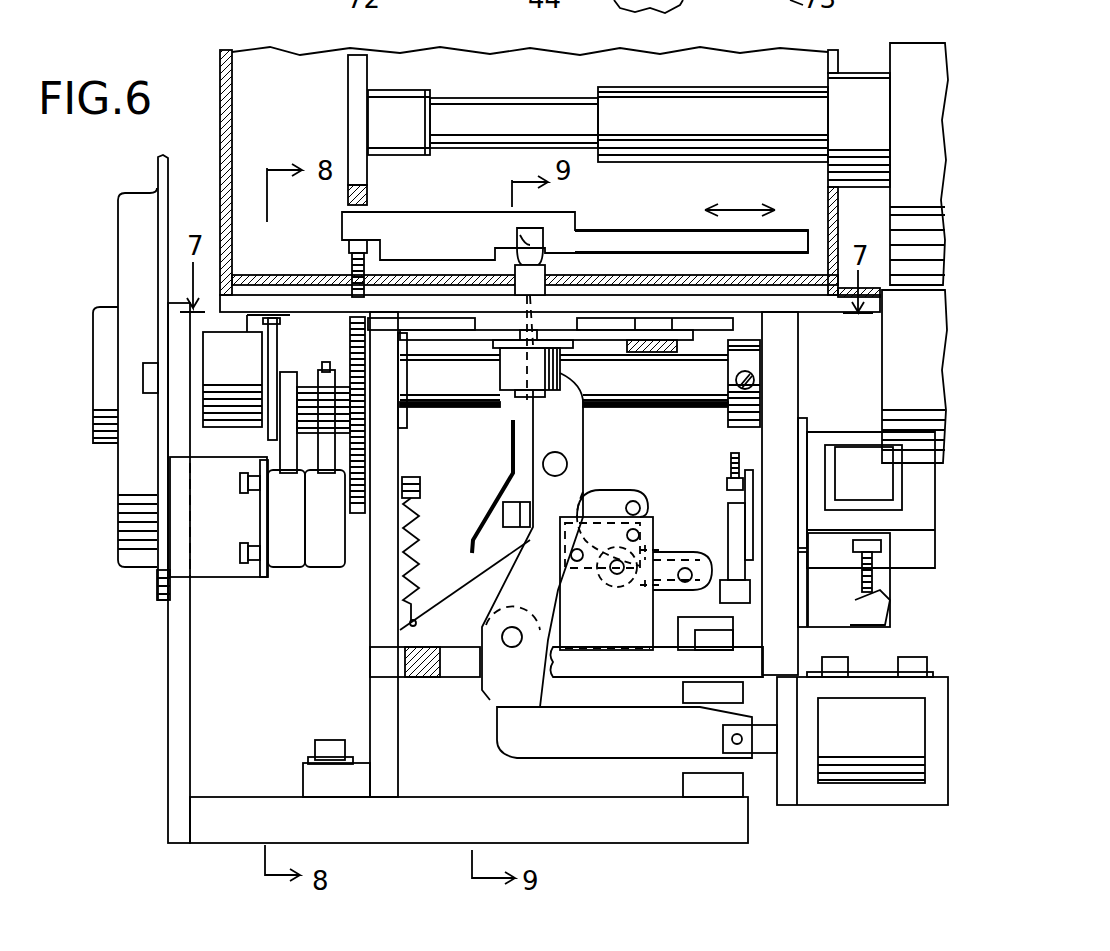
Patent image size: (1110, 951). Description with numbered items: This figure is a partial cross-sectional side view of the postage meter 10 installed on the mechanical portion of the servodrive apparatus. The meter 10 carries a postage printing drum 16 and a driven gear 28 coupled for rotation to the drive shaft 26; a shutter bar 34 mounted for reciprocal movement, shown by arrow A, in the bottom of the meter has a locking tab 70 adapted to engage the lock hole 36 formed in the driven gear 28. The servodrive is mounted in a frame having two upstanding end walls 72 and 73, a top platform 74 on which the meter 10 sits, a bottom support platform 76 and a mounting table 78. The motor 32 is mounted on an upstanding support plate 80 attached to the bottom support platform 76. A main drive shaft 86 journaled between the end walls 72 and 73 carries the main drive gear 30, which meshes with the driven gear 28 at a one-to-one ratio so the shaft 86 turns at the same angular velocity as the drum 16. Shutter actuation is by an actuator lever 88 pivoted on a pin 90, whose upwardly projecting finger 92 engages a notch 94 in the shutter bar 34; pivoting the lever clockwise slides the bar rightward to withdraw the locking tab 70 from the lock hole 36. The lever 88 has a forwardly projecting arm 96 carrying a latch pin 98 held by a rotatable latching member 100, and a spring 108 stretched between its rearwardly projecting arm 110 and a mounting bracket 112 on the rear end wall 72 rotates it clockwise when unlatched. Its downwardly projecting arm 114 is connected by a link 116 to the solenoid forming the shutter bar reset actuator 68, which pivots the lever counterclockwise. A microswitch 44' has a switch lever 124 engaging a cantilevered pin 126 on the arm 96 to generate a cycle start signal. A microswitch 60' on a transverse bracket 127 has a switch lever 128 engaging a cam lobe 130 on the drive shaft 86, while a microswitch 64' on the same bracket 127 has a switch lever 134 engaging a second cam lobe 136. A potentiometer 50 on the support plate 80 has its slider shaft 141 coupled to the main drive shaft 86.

The postage meter 10 is at (212, 82).
The postage printing drum 16 is at (902, 43).
The drive shaft 26 is at (670, 150).
The driven gear 28 is at (365, 172).
The main drive gear 30 is at (355, 448).
The motor 32 is at (118, 252).
The shutter bar 34 is at (612, 238).
The lock hole 36 is at (350, 215).
The microswitch 44' is at (612, 494).
The potentiometer 50 is at (240, 428).
The microswitch 60' is at (321, 485).
The microswitch 64' is at (271, 491).
The shutter bar reset actuator 68 is at (892, 800).
The locking tab 70 is at (380, 213).
The rear end wall 72 is at (378, 625).
The front end wall 73 is at (790, 405).
The top platform 74 is at (810, 307).
The bottom support platform 76 is at (469, 812).
The mounting table 78 is at (387, 672).
The support plate 80 is at (170, 715).
The main drive shaft 86 is at (690, 405).
The actuator lever 88 is at (580, 440).
The pin 90 is at (510, 625).
The finger 92 is at (545, 238).
The notch 94 is at (520, 235).
The forwardly projecting arm 96 is at (668, 557).
The latch pin 98 is at (722, 560).
The latching member 100 is at (745, 487).
The spring 108 is at (420, 520).
The rearwardly projecting arm 110 is at (470, 590).
The mounting bracket 112 is at (430, 477).
The downwardly projecting arm 114 is at (495, 700).
The link 116 is at (600, 755).
The switch lever 124 is at (648, 585).
The cantilevered pin 126 is at (700, 590).
The transverse bracket 127 is at (210, 580).
The switch lever 128 is at (320, 457).
The cam lobe 130 is at (345, 400).
The switch lever 134 is at (280, 450).
The second cam lobe 136 is at (285, 330).
The slider shaft 141 is at (265, 372).
The arrow A is at (740, 210).